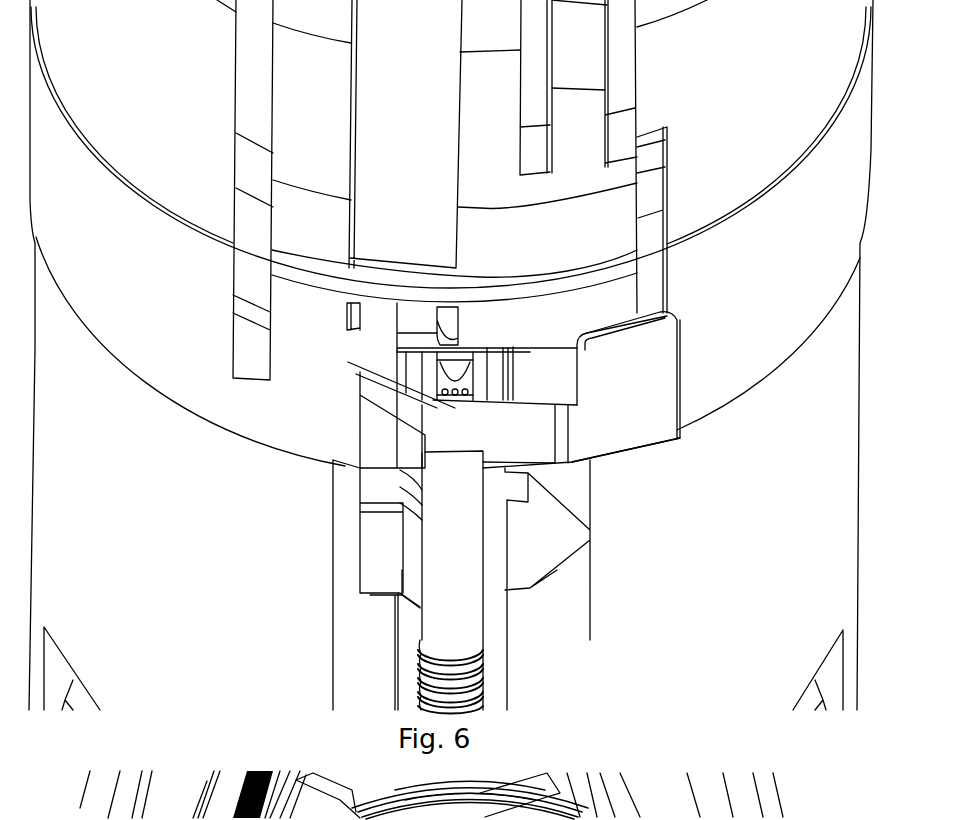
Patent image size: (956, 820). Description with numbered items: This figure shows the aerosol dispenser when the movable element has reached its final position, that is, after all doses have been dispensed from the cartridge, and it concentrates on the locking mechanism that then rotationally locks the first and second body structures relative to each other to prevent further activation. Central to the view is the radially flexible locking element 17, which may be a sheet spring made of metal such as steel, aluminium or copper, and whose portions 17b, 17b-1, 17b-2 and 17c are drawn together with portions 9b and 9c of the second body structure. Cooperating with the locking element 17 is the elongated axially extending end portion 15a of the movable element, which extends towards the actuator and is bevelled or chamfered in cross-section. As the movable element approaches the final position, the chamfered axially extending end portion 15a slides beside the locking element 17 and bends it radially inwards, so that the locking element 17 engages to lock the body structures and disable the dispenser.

The guide projection 9b is at (378, 330).
The guide surface 9c is at (363, 358).
The first arm surface 17b-1 is at (362, 378).
The second arm surface 17b-2 is at (387, 410).
The locking arm 17b is at (377, 446).
The locking element 17 is at (662, 402).
The bracket flange 17c is at (665, 360).
The axially extending end portion 15a is at (467, 527).